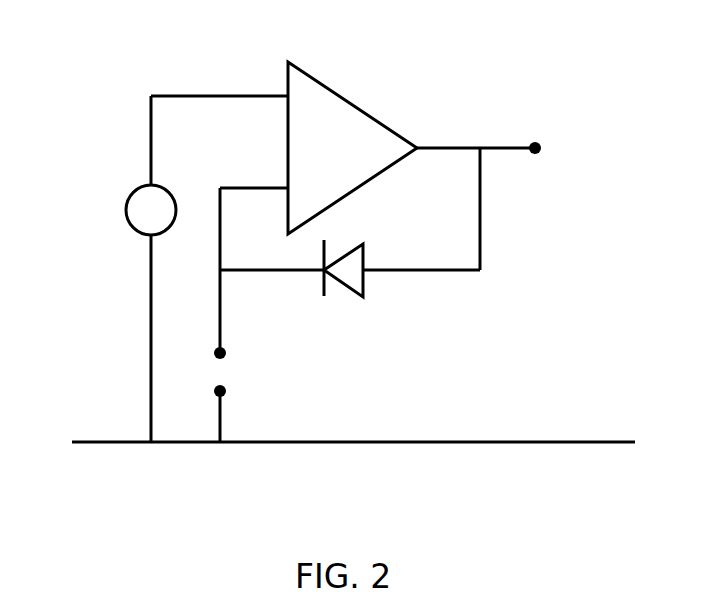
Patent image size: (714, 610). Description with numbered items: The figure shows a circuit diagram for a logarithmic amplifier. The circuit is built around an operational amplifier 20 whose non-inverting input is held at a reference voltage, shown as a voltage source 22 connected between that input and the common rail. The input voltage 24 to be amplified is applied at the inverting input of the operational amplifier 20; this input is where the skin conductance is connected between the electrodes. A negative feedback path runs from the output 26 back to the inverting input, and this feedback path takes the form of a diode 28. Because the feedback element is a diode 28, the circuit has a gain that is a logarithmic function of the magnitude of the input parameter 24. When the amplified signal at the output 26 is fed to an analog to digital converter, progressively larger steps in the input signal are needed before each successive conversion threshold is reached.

The operational amplifier 20 is at (360, 107).
The voltage source 22 is at (130, 229).
The input voltage 24 is at (230, 378).
The output 26 is at (539, 153).
The diode 28 is at (362, 282).